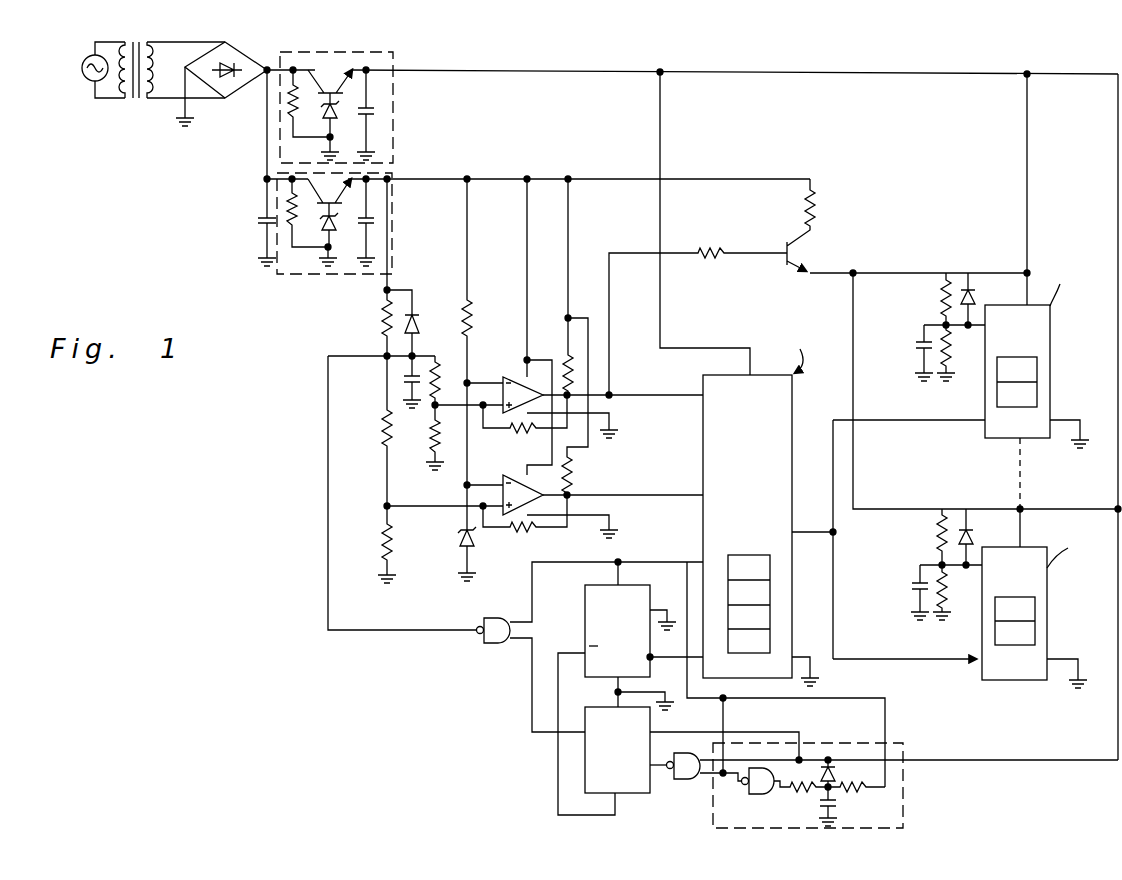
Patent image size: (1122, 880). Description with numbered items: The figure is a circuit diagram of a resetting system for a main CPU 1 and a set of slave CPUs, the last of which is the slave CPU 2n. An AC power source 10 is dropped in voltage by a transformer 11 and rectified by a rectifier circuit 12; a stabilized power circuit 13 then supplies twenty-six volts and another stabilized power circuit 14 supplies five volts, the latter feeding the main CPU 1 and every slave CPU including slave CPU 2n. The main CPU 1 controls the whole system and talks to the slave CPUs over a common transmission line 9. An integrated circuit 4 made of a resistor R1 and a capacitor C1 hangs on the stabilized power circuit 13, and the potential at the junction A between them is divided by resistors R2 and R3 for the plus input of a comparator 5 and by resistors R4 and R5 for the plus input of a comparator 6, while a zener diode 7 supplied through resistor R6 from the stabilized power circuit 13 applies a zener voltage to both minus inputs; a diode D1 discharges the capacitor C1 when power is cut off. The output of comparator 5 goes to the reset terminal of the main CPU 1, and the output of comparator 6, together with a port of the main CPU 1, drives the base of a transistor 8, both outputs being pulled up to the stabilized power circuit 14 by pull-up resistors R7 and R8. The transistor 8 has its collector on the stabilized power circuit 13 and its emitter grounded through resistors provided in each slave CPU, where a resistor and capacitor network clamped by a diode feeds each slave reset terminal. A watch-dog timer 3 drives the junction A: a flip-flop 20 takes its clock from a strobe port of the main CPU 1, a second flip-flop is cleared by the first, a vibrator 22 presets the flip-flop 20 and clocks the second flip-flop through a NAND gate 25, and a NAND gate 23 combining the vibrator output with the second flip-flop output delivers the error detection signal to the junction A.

The main CPU 1 is at (702, 538).
The slave CPU 2n is at (1047, 602).
The watch-dog timer 3 is at (756, 695).
The integrated circuit 4 is at (395, 381).
The comparator 5 is at (508, 478).
The comparator 6 is at (517, 378).
The zener diode 7 is at (470, 537).
The transistor 8 is at (790, 266).
The common transmission line 9 is at (806, 528).
The AC power source 10 is at (103, 100).
The transformer 11 is at (150, 100).
The rectifier circuit 12 is at (228, 100).
The stabilized power circuit 13 is at (393, 218).
The stabilized power circuit 14 is at (393, 110).
The flip-flop 20 is at (585, 620).
The vibrator 22 is at (903, 790).
The NAND gate 23 is at (482, 645).
The NAND gate 25 is at (688, 780).
The junction A is at (371, 345).
The resistor R1 is at (380, 321).
The resistor R2 is at (380, 427).
The resistor R3 is at (380, 538).
The resistor R4 is at (452, 356).
The resistor R5 is at (442, 432).
The resistor R6 is at (471, 334).
The pull-up resistor R7 is at (572, 368).
The pull-up resistor R8 is at (572, 470).
The capacitor C1 is at (405, 386).
The diode D1 is at (420, 321).